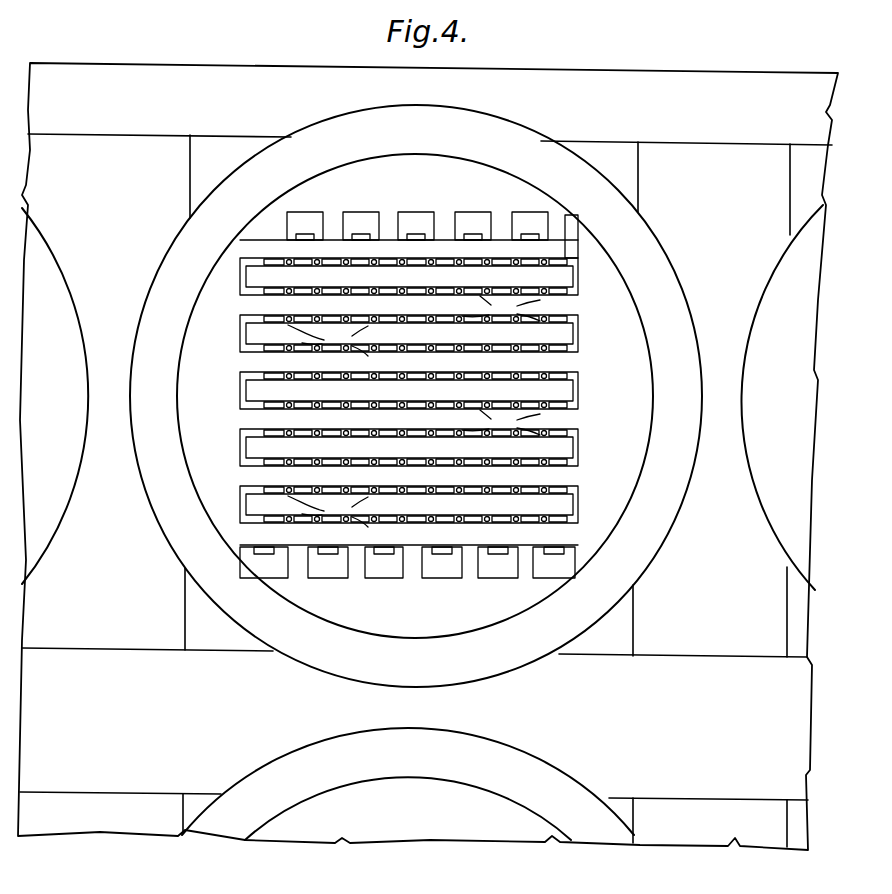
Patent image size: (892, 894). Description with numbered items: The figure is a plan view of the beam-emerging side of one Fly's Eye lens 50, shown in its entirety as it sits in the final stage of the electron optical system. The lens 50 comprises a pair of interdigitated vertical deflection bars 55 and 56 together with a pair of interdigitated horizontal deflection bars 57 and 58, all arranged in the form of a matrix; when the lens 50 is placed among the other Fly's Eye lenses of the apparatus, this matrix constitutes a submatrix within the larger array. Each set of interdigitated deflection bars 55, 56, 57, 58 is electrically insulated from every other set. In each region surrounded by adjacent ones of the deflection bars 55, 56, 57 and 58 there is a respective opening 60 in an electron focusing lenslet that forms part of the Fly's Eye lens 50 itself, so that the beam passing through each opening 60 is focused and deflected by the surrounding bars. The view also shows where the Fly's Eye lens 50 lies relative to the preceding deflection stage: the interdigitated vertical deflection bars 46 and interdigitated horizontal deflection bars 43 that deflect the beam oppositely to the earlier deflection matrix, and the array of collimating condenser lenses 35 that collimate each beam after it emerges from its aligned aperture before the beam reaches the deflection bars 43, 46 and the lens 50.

The condenser lens 35 is at (213, 627).
The interdigitated horizontal deflection bar 43 is at (722, 165).
The interdigitated vertical deflection bar 46 is at (770, 78).
The Fly's Eye lens 50 is at (522, 136).
The interdigitated vertical deflection bar 55 is at (409, 390).
The interdigitated vertical deflection bar 56 is at (409, 380).
The interdigitated horizontal deflection bar 57 is at (495, 597).
The interdigitated horizontal deflection bar 58 is at (553, 226).
The opening 60 is at (414, 411).